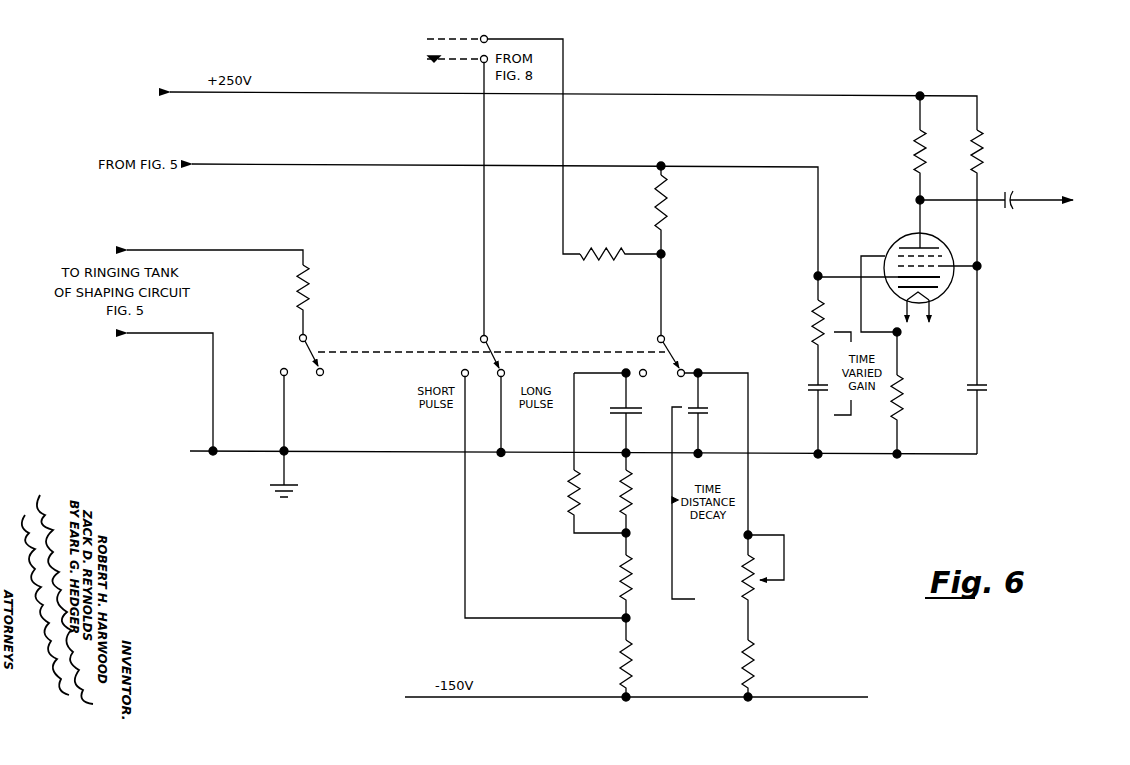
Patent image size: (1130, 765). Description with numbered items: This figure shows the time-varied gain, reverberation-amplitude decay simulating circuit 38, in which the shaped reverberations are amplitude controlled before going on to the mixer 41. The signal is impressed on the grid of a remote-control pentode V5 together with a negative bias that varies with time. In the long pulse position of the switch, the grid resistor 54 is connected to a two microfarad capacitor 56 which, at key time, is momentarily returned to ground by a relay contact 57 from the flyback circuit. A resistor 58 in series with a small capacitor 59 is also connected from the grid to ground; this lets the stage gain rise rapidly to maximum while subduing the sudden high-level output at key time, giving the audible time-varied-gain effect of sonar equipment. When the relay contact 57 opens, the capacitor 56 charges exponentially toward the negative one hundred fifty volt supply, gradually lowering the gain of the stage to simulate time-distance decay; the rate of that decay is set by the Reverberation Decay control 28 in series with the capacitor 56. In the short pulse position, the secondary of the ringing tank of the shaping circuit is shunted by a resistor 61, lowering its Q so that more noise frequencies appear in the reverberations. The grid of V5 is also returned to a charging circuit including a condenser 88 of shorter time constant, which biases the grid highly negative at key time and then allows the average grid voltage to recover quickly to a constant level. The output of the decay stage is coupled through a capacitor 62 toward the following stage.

The relay contact 57 is at (445, 39).
The 12K resistor 61 is at (308, 291).
The grid resistor 54 is at (668, 209).
The resistor 58 is at (812, 324).
The 0.002 mfd. capacitor 59 is at (812, 389).
The 500 mmf. capacitor 62 is at (1011, 197).
The remote-control pentode V5 is at (926, 238).
The condenser 88 is at (632, 412).
The 2 mfd. capacitor 56 is at (702, 414).
The Reverberation Decay control 28 is at (767, 588).
The time-varied gain, reverberation-amplitude decay simulating circuit 38 is at (932, 482).
The mixer 41 is at (1067, 200).